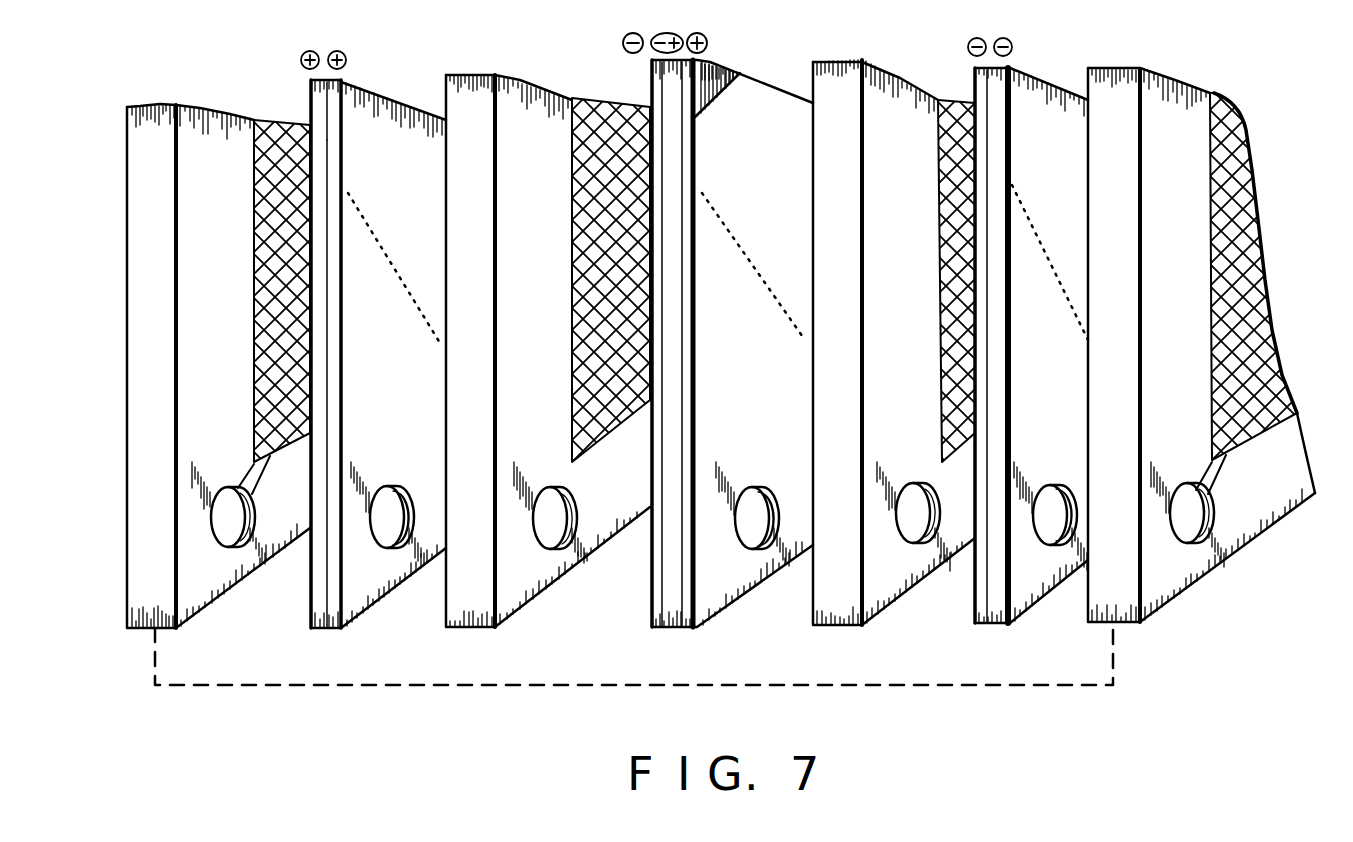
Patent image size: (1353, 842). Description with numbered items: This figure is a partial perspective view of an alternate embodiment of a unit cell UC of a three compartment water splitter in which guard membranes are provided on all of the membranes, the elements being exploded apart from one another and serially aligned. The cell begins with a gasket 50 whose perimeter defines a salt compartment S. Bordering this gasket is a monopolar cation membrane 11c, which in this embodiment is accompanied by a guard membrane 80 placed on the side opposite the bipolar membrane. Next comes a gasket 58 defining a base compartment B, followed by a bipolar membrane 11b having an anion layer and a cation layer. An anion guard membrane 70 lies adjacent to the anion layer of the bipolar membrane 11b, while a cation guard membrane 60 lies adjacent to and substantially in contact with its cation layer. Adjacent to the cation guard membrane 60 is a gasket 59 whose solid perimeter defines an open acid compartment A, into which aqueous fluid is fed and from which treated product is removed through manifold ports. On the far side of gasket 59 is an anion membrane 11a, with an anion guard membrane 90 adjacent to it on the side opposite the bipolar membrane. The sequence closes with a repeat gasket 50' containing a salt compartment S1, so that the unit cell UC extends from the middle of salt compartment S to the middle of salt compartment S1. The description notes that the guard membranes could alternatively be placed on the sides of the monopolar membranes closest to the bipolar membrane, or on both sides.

The gasket 50 is at (185, 383).
The gasket 50' is at (1201, 362).
The gasket 58 is at (517, 580).
The gasket 59 is at (837, 595).
The guard membrane 80 is at (317, 177).
The anion guard membrane 70 is at (652, 90).
The cation guard membrane 60 is at (752, 60).
The anion guard membrane 90 is at (1012, 95).
The anion membrane 11a is at (983, 90).
The bipolar membrane 11b is at (672, 137).
The cation membrane 11c is at (333, 117).
The salt compartment S is at (277, 120).
The salt compartment S1 is at (1232, 153).
The base compartment B is at (603, 100).
The acid compartment A is at (953, 100).
The unit cell UC is at (1005, 683).